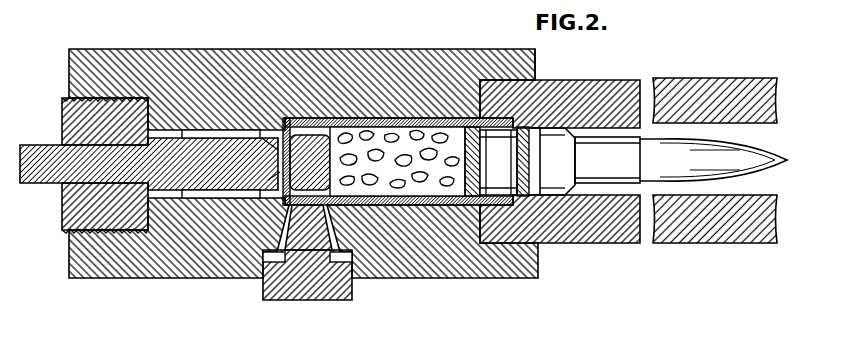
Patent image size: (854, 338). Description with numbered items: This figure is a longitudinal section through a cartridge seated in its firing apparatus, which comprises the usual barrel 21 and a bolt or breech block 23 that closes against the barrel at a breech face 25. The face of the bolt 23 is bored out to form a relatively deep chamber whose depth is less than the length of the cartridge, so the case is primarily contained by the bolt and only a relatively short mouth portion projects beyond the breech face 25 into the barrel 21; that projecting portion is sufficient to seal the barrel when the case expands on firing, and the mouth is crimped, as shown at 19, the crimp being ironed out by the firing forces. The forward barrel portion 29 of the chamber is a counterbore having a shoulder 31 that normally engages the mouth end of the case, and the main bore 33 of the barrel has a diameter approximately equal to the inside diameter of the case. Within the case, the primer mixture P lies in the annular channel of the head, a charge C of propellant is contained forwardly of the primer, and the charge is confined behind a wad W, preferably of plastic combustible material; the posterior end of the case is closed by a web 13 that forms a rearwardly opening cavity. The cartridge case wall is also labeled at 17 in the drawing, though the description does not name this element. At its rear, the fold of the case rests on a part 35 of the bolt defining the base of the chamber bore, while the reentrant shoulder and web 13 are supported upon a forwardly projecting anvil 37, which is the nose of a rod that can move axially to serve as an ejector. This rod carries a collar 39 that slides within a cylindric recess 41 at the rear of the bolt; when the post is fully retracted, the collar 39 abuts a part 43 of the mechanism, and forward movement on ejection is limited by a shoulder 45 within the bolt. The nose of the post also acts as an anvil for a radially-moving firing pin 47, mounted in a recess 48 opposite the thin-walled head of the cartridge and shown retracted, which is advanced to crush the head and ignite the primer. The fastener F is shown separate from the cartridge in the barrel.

The bolt 23 is at (226, 52).
The crimp 19 is at (540, 245).
The breech face 25 is at (468, 78).
The part of the mechanism 43 is at (149, 164).
The collar 39 is at (168, 130).
The cylindric recess 41 is at (216, 200).
The part of the bolt 35 is at (280, 152).
The primer mixture P is at (292, 164).
The liner 17 is at (348, 120).
The anvil 37 is at (310, 162).
The web 13 is at (397, 161).
The wad W is at (470, 208).
The charge of propellant C is at (504, 161).
The shoulder 31 is at (552, 161).
The main bore 33 is at (610, 128).
The forward barrel portion 29 is at (515, 118).
The barrel 21 is at (385, 118).
The fastener F is at (713, 160).
The shoulder 45 is at (247, 205).
The firing pin 47 is at (302, 300).
The recess 48 is at (270, 258).